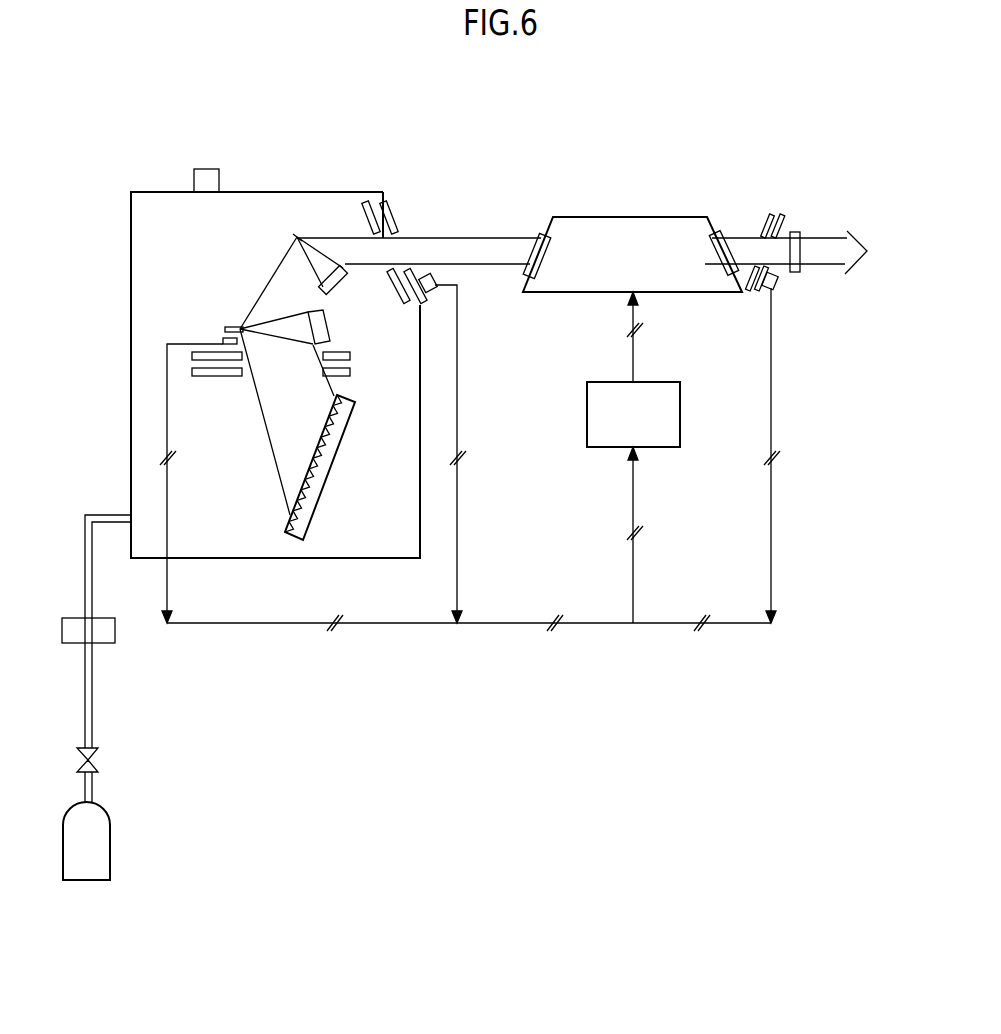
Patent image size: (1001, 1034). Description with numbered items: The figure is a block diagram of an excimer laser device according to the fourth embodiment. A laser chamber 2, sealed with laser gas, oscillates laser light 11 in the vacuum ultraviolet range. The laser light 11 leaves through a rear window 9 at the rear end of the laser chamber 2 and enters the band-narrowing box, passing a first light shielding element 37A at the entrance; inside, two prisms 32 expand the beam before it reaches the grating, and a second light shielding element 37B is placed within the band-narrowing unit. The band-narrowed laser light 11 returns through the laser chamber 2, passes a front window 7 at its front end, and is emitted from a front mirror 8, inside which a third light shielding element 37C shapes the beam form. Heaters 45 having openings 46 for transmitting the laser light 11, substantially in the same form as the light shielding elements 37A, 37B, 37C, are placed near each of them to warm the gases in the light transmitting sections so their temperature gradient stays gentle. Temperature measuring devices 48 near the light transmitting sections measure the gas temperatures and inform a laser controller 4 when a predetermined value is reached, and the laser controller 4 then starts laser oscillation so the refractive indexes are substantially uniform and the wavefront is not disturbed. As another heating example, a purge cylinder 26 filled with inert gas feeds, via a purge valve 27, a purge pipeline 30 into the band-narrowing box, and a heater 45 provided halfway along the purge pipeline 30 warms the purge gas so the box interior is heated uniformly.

The laser chamber 2 is at (628, 217).
The laser controller 4 is at (685, 413).
The front window 7 is at (720, 232).
The front mirror 8 is at (797, 232).
The rear window 9 is at (537, 235).
The laser light 11 is at (830, 240).
The purge cylinder 26 is at (112, 845).
The purge valve 27 is at (100, 763).
The purge pipeline 30 is at (95, 705).
The prism 32 is at (295, 237).
The first light shielding element 37A is at (385, 200).
The second light shielding element 37B is at (350, 356).
The third light shielding element 37C is at (779, 214).
The heater 45 is at (207, 168).
The opening 46 is at (386, 251).
The temperature measuring device 48 is at (226, 331).